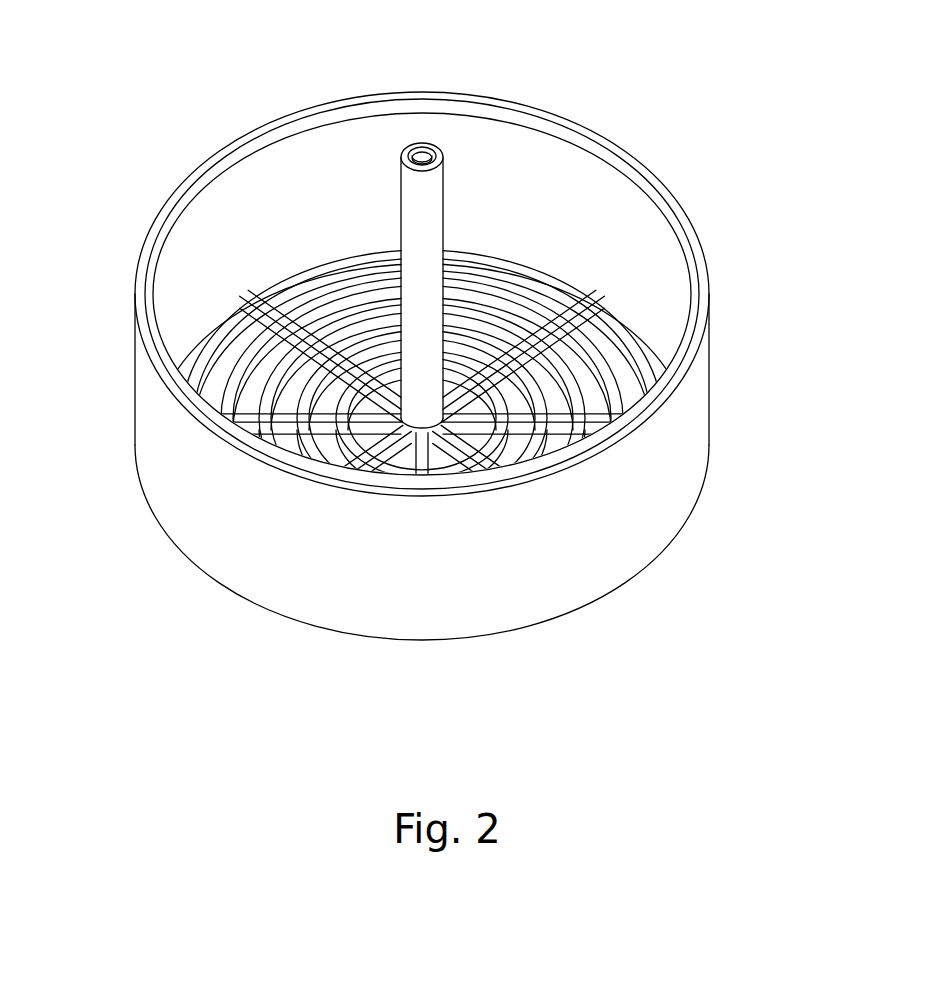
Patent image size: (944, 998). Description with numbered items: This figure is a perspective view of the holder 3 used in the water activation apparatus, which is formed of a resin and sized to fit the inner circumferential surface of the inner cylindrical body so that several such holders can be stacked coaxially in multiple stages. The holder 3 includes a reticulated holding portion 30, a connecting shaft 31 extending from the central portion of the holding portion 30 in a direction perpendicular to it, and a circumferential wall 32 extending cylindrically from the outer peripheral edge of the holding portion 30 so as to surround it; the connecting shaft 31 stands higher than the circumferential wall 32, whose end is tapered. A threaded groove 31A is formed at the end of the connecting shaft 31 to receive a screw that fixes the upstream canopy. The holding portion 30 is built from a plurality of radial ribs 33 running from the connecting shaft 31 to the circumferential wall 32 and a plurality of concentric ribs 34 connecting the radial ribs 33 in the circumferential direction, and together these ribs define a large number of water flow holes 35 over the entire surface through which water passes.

The holder 3 is at (410, 355).
The holding portion 30 is at (382, 372).
The connecting shaft 31 is at (360, 216).
The threaded groove 31A is at (424, 147).
The circumferential wall 32 is at (693, 410).
The radial ribs 33 is at (275, 297).
The concentric ribs 34 is at (233, 308).
The water flow holes 35 is at (515, 297).